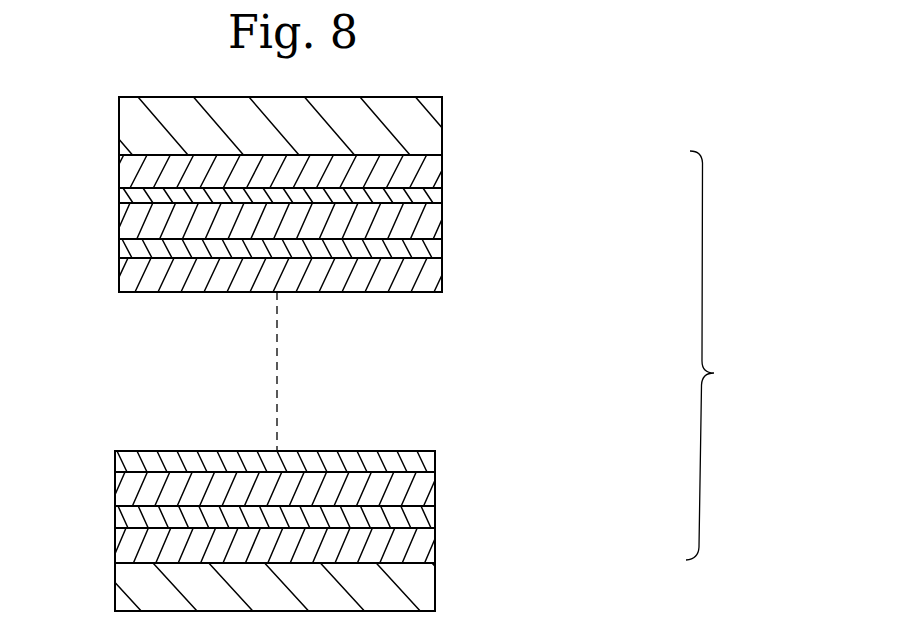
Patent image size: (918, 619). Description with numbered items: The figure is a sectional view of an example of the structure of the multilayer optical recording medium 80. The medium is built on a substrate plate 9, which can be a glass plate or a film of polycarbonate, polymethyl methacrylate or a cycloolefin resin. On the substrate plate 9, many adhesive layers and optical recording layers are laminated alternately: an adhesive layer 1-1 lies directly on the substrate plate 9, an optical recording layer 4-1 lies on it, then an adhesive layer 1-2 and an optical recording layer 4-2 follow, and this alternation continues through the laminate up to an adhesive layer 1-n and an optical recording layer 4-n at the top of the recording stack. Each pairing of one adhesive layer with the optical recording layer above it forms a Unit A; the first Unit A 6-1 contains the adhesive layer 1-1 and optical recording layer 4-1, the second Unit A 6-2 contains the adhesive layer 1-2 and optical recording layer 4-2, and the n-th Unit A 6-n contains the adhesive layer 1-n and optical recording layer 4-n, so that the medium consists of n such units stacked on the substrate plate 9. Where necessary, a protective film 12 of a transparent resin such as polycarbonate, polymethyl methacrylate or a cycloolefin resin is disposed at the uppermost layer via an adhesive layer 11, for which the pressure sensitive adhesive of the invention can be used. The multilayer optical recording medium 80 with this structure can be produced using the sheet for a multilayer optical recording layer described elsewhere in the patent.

The multilayer optical recording medium 80 is at (433, 66).
The protective film 12 is at (119, 126).
The adhesive layer 11 is at (119, 163).
The optical recording layer 4-n is at (442, 190).
The adhesive layer 1-n is at (442, 219).
The Unit A 6-n is at (375, 199).
The optical recording layer 4-2 is at (435, 461).
The adhesive layer 1-2 is at (435, 493).
The Unit A 6-2 is at (349, 475).
The optical recording layer 4-1 is at (435, 515).
The adhesive layer 1-1 is at (435, 541).
The Unit A 6-1 is at (349, 531).
The substrate plate 9 is at (435, 589).